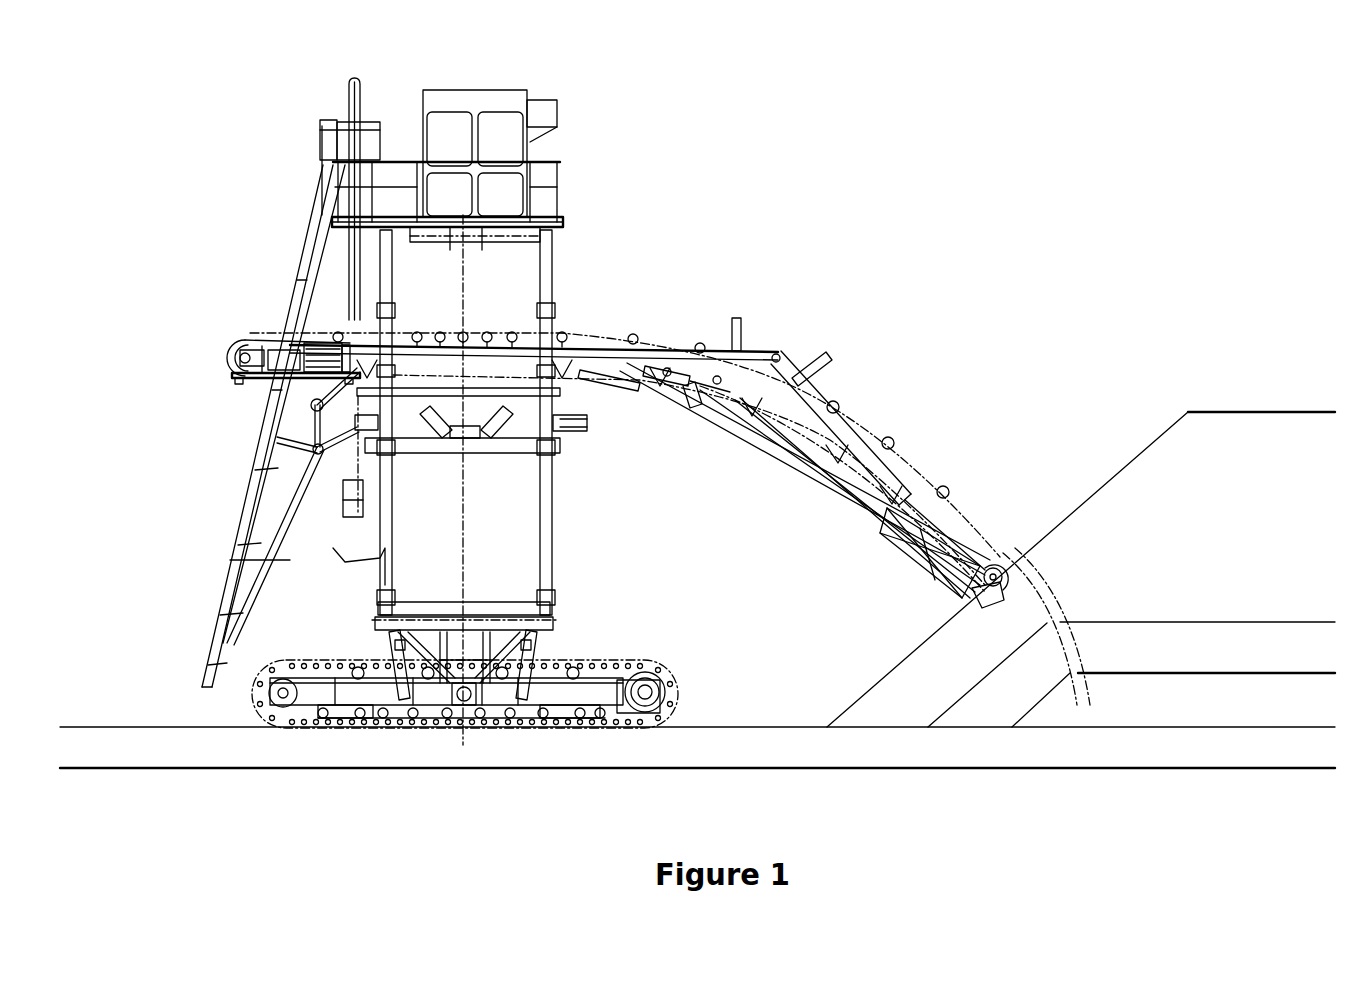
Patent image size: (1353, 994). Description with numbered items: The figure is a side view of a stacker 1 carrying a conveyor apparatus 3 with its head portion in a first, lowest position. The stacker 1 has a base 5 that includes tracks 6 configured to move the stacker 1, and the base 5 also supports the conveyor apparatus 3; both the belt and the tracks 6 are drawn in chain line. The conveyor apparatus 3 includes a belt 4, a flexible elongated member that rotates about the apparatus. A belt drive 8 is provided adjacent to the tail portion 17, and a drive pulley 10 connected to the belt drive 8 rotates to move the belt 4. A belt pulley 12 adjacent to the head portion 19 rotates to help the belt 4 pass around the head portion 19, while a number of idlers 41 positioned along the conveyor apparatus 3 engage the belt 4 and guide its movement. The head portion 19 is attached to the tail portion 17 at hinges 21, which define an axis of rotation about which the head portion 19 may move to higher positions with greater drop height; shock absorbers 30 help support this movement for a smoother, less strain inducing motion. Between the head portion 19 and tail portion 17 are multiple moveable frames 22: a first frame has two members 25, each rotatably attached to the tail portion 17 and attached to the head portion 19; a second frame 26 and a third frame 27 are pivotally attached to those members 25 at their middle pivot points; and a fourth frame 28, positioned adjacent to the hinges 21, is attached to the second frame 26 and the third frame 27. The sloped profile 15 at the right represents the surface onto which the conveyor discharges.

The stacker 1 is at (240, 130).
The conveyor apparatus 3 is at (667, 390).
The belt 4 is at (622, 340).
The base 5 is at (557, 610).
The tracks 6 is at (668, 688).
The belt drive 8 is at (313, 353).
The drive pulley 10 is at (235, 353).
The belt pulley 12 is at (1000, 573).
The receiving hopper profile 15 is at (1188, 425).
The tail portion 17 is at (345, 318).
The head portion 19 is at (985, 510).
The hinges 21 is at (780, 353).
The moveable frames 22 is at (750, 428).
The members 25 is at (782, 403).
The second frame 26 is at (677, 338).
The third frame 27 is at (868, 402).
The fourth frame 28 is at (752, 347).
The shock absorbers 30 is at (712, 382).
The idlers 41 is at (563, 340).